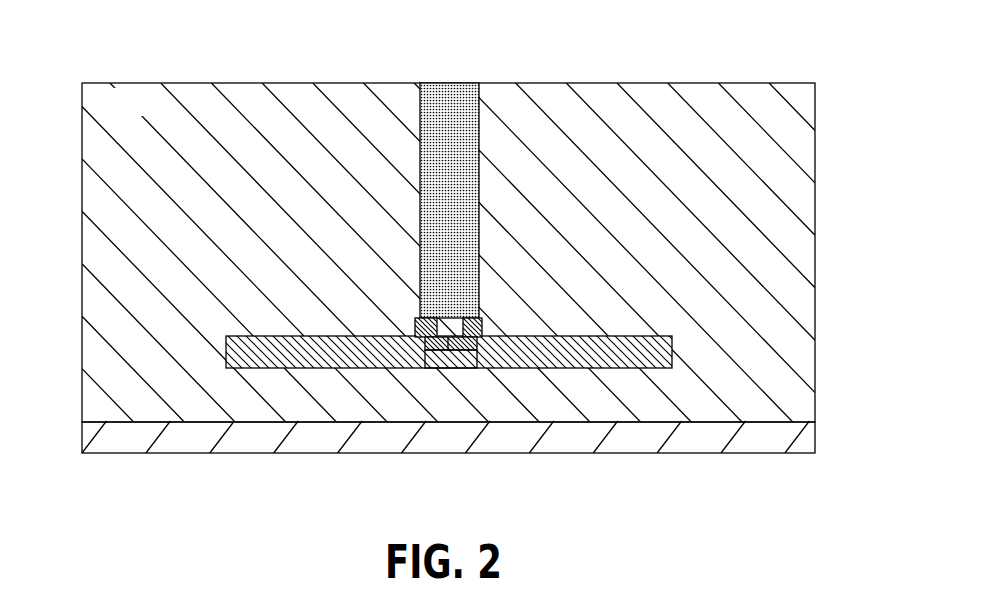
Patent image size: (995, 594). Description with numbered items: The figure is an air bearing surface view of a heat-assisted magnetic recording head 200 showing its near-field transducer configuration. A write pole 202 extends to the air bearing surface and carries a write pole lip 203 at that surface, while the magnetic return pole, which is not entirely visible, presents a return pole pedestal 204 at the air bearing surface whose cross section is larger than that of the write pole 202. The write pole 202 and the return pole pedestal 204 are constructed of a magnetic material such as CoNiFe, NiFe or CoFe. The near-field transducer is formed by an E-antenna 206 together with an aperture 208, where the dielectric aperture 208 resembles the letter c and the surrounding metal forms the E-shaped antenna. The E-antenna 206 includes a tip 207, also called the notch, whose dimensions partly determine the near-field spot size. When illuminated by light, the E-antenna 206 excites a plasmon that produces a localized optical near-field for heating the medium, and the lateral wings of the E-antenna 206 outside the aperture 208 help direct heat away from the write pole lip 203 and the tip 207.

The heat-assisted magnetic recording head 200 is at (125, 54).
The write pole 202 is at (450, 83).
The write pole lip 203 is at (485, 352).
The return pole pedestal 204 is at (793, 446).
The E-antenna 206 is at (672, 347).
The tip 207 is at (448, 351).
The aperture 208 is at (421, 338).